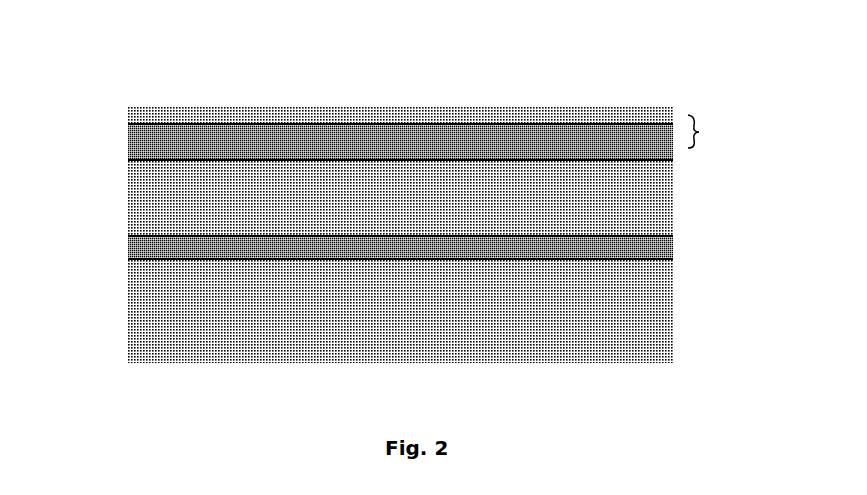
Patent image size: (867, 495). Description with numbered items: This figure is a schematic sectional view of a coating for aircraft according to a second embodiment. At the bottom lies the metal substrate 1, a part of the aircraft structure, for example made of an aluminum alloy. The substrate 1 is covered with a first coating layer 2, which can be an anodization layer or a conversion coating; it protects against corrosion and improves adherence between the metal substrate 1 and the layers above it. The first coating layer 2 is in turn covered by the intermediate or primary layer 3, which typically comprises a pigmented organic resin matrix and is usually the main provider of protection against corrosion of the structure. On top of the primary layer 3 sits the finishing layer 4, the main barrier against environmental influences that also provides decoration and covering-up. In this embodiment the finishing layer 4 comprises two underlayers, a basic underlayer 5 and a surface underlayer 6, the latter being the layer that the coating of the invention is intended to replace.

The metal substrate 1 is at (647, 320).
The first coating layer 2 is at (120, 237).
The primary layer 3 is at (630, 200).
The finishing layer 4 is at (690, 123).
The basic underlayer 5 is at (123, 140).
The surface underlayer 6 is at (123, 112).